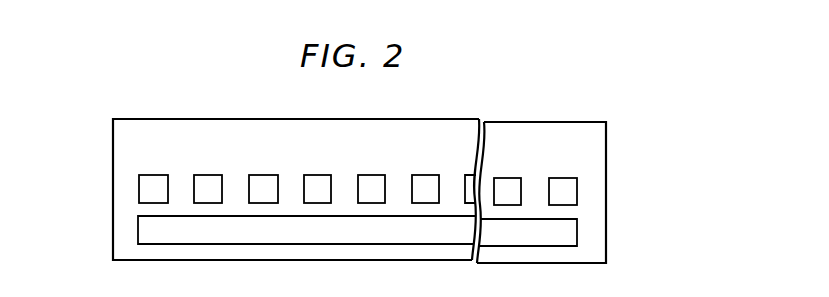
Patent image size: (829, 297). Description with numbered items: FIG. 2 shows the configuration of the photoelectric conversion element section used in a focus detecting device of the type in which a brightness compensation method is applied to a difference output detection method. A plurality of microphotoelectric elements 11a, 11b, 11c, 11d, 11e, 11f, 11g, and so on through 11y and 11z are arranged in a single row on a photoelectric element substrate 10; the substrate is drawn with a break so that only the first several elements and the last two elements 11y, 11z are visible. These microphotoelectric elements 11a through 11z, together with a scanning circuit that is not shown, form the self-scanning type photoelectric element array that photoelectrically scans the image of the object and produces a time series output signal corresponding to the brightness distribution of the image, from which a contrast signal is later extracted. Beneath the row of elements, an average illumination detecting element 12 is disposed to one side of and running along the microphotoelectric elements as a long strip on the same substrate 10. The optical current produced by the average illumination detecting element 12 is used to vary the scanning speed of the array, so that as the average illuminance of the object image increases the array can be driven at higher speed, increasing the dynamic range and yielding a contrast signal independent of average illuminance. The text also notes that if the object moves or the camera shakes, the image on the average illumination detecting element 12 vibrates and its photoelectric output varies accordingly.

The photoelectric element substrate 10 is at (562, 133).
The microphotoelectric element 11a is at (151, 177).
The microphotoelectric element 11b is at (210, 177).
The microphotoelectric element 11c is at (263, 177).
The microphotoelectric element 11d is at (313, 177).
The microphotoelectric element 11e is at (373, 177).
The microphotoelectric element 11f is at (424, 177).
The microphotoelectric element 11g is at (470, 177).
The microphotoelectric element 11y is at (510, 181).
The microphotoelectric element 11z is at (564, 181).
The average illumination detecting element 12 is at (567, 234).